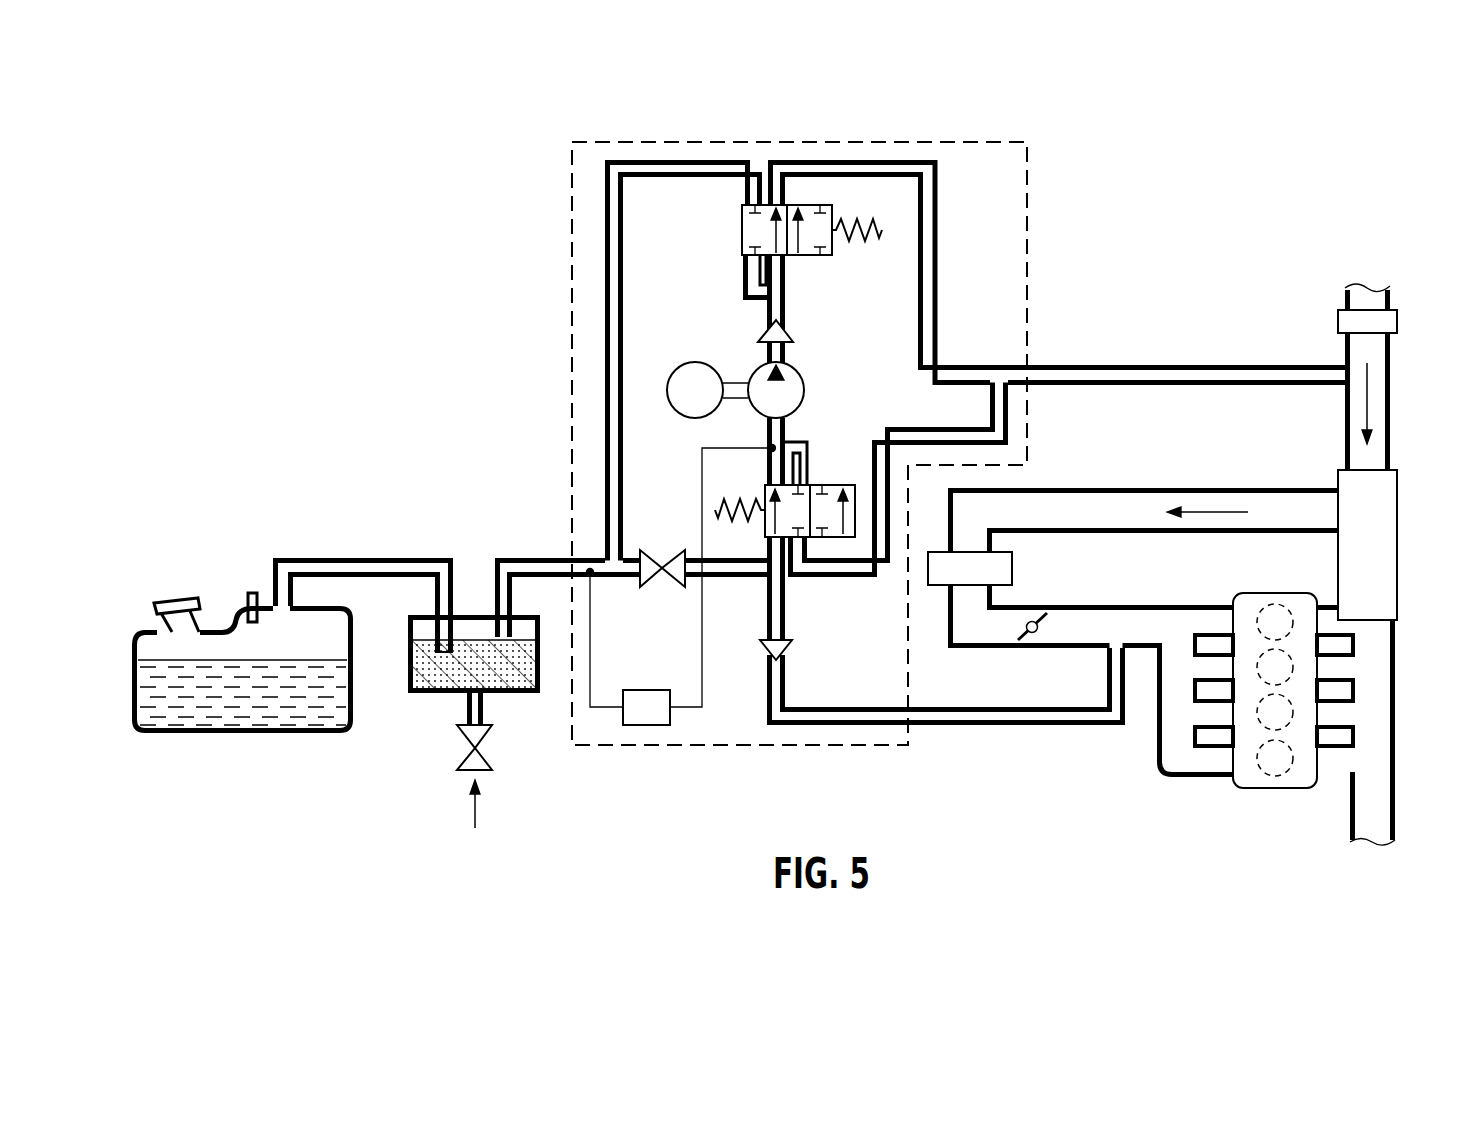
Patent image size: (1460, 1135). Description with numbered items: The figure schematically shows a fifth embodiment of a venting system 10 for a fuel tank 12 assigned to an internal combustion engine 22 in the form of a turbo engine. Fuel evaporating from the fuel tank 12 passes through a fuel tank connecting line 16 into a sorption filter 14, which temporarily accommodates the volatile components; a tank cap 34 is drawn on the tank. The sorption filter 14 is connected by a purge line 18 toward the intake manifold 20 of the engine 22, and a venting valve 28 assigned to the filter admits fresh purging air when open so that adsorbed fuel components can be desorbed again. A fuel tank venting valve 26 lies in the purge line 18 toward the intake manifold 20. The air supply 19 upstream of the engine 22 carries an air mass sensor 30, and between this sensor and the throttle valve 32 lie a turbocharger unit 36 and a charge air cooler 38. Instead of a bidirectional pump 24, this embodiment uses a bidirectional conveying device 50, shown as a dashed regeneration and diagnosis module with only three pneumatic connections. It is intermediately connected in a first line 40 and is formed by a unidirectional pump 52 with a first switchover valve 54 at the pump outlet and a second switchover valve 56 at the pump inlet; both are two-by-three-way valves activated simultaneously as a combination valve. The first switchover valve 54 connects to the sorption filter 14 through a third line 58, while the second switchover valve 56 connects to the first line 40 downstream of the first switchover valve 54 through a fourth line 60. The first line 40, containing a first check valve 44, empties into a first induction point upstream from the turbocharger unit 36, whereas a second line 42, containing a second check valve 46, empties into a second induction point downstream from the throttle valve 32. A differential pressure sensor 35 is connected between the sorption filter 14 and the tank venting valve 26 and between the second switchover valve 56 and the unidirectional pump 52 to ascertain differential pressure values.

The venting system 10 is at (325, 352).
The fuel tank 12 is at (242, 733).
The sorption filter 14 is at (432, 692).
The fuel tank connecting line 16 is at (355, 558).
The purge line 18 is at (535, 558).
The air supply 19 is at (1372, 349).
The intake manifold 20 is at (1084, 625).
The internal combustion engine 22 is at (1250, 774).
The bidirectional pump 24 is at (698, 372).
The fuel tank venting valve 26 is at (678, 566).
The venting valve 28 is at (478, 758).
The air mass sensor 30 is at (1352, 320).
The throttle valve 32 is at (1032, 636).
The tank cap 34 is at (247, 600).
The differential pressure sensor 35 is at (646, 706).
The turbocharger unit 36 is at (1360, 565).
The charge air cooler 38 is at (995, 568).
The first line 40 is at (938, 220).
The second line 42 is at (835, 707).
The first check valve 44 is at (781, 330).
The second check valve 46 is at (781, 650).
The bidirectional conveying device 50 is at (1030, 292).
The unidirectional pump 52 is at (790, 397).
The first switchover valve 54 is at (812, 260).
The second switchover valve 56 is at (830, 500).
The third line 58 is at (677, 178).
The fourth line 60 is at (990, 405).